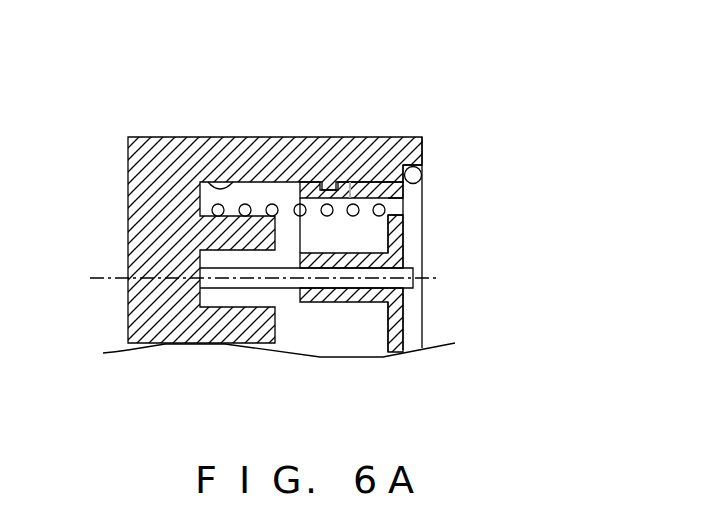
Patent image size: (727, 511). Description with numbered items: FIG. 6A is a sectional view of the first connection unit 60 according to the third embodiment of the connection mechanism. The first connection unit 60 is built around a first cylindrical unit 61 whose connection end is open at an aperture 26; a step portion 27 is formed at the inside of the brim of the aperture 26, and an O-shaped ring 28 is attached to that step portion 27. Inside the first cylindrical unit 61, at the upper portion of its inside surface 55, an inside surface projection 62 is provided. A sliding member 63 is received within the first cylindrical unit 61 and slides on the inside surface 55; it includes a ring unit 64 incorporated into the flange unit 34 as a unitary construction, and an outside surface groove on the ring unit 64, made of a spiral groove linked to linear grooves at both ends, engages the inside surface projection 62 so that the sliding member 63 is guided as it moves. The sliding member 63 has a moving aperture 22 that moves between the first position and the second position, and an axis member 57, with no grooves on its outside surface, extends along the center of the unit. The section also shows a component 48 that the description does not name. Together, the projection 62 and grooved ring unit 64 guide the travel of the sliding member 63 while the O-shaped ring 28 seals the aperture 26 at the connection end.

The first connection unit 60 is at (312, 185).
The first cylindrical unit 61 is at (218, 137).
The aperture 26 is at (413, 322).
The step portion 27 is at (422, 165).
The O-shaped ring 28 is at (421, 180).
The inside surface 55 is at (210, 182).
The coil spring 48 is at (216, 205).
The inside surface projection 62 is at (330, 182).
The ring unit 64 is at (368, 190).
The moving aperture 22 is at (390, 210).
The axis member 57 is at (405, 272).
The sliding member 63 is at (404, 225).
The flange unit 34 is at (396, 242).